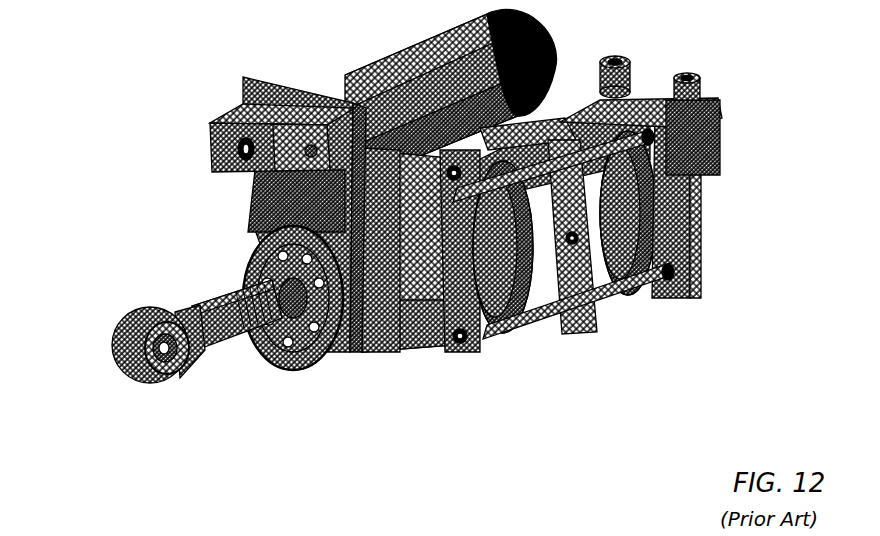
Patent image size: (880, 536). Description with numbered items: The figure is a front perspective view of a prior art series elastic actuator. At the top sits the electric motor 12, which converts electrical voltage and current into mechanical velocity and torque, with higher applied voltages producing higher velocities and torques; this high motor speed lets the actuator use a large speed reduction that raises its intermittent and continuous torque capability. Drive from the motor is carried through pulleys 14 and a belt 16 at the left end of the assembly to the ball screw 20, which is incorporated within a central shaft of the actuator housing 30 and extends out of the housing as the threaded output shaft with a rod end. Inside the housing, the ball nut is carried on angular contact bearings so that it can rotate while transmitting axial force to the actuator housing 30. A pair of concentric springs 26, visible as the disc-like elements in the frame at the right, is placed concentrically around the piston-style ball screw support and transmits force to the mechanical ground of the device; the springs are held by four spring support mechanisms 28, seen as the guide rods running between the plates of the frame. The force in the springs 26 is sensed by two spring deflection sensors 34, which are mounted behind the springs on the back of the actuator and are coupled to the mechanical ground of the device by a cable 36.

The electric motor 12 is at (405, 41).
The pulleys 14 is at (270, 117).
The belt 16 is at (263, 197).
The ball screw 20 is at (242, 328).
The pair of concentric springs 26 is at (488, 292).
The spring support mechanisms 28 is at (527, 329).
The actuator housing 30 is at (678, 224).
The spring deflection sensors 34 is at (643, 88).
The cable 36 is at (635, 64).